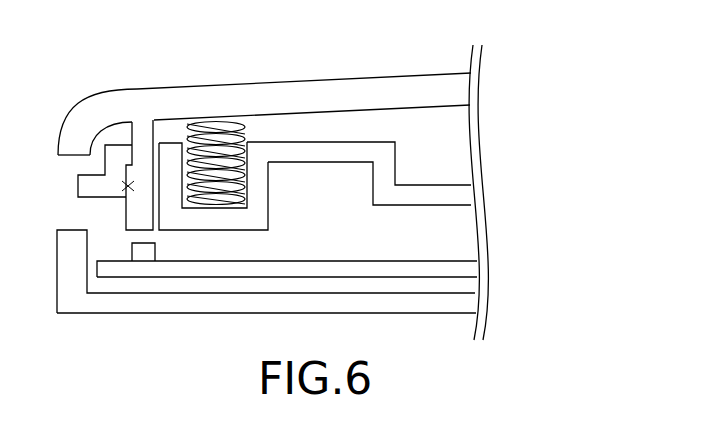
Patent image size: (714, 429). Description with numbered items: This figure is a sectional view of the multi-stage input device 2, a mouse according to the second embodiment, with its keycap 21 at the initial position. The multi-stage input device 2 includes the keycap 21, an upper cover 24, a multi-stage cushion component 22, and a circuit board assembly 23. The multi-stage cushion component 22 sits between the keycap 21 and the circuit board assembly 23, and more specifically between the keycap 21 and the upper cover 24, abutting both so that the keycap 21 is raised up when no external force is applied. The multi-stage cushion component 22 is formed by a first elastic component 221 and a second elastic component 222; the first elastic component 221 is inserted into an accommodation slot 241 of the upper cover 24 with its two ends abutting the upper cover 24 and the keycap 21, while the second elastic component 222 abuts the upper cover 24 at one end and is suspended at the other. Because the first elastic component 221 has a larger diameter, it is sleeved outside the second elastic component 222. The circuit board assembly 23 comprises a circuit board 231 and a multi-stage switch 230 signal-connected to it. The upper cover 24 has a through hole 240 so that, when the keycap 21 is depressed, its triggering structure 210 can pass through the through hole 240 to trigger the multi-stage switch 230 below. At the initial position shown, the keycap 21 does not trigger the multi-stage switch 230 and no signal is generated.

The multi-stage input device 2 is at (106, 30).
The keycap 21 is at (332, 90).
The triggering structure 210 is at (143, 165).
The multi-stage cushion component 22 is at (550, 42).
The first elastic component 221 is at (192, 120).
The second elastic component 222 is at (250, 168).
The circuit board assembly 23 is at (550, 127).
The multi-stage switch 230 is at (140, 252).
The circuit board 231 is at (375, 270).
The upper cover 24 is at (380, 183).
The through hole 240 is at (125, 188).
The accommodation slot 241 is at (232, 150).